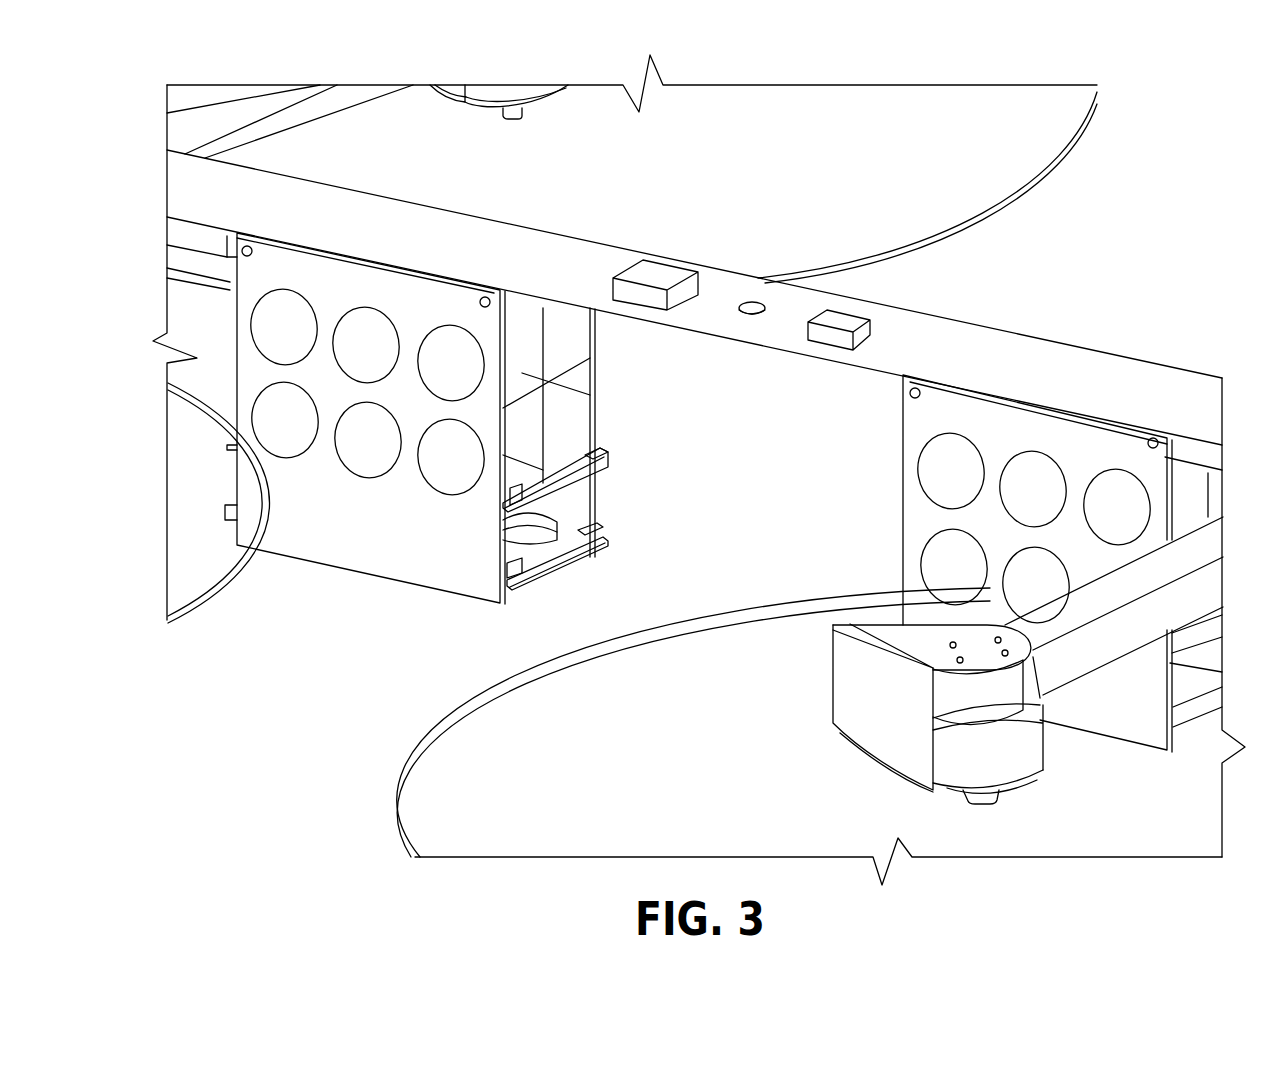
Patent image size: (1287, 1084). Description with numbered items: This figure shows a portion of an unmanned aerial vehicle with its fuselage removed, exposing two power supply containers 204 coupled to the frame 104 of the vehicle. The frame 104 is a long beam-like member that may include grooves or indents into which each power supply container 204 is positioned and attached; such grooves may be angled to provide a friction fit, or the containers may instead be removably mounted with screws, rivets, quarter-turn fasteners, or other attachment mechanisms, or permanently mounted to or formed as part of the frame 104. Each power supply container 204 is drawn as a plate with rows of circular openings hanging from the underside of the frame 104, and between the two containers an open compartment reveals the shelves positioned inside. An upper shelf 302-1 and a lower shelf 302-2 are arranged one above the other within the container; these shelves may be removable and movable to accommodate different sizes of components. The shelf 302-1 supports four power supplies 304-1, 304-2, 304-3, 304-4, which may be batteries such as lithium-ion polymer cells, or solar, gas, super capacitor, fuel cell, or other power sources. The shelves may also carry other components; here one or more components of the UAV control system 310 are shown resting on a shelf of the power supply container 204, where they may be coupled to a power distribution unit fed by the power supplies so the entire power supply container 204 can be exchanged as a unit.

The frame 104 is at (1005, 357).
The power supply container 204 is at (373, 525).
The power supply 304-1 is at (573, 355).
The power supply 304-2 is at (565, 420).
The power supply 304-3 is at (522, 373).
The power supply 304-4 is at (518, 455).
The shelf 302-1 is at (598, 483).
The shelf 302-2 is at (532, 572).
The UAV control system 310 is at (595, 550).